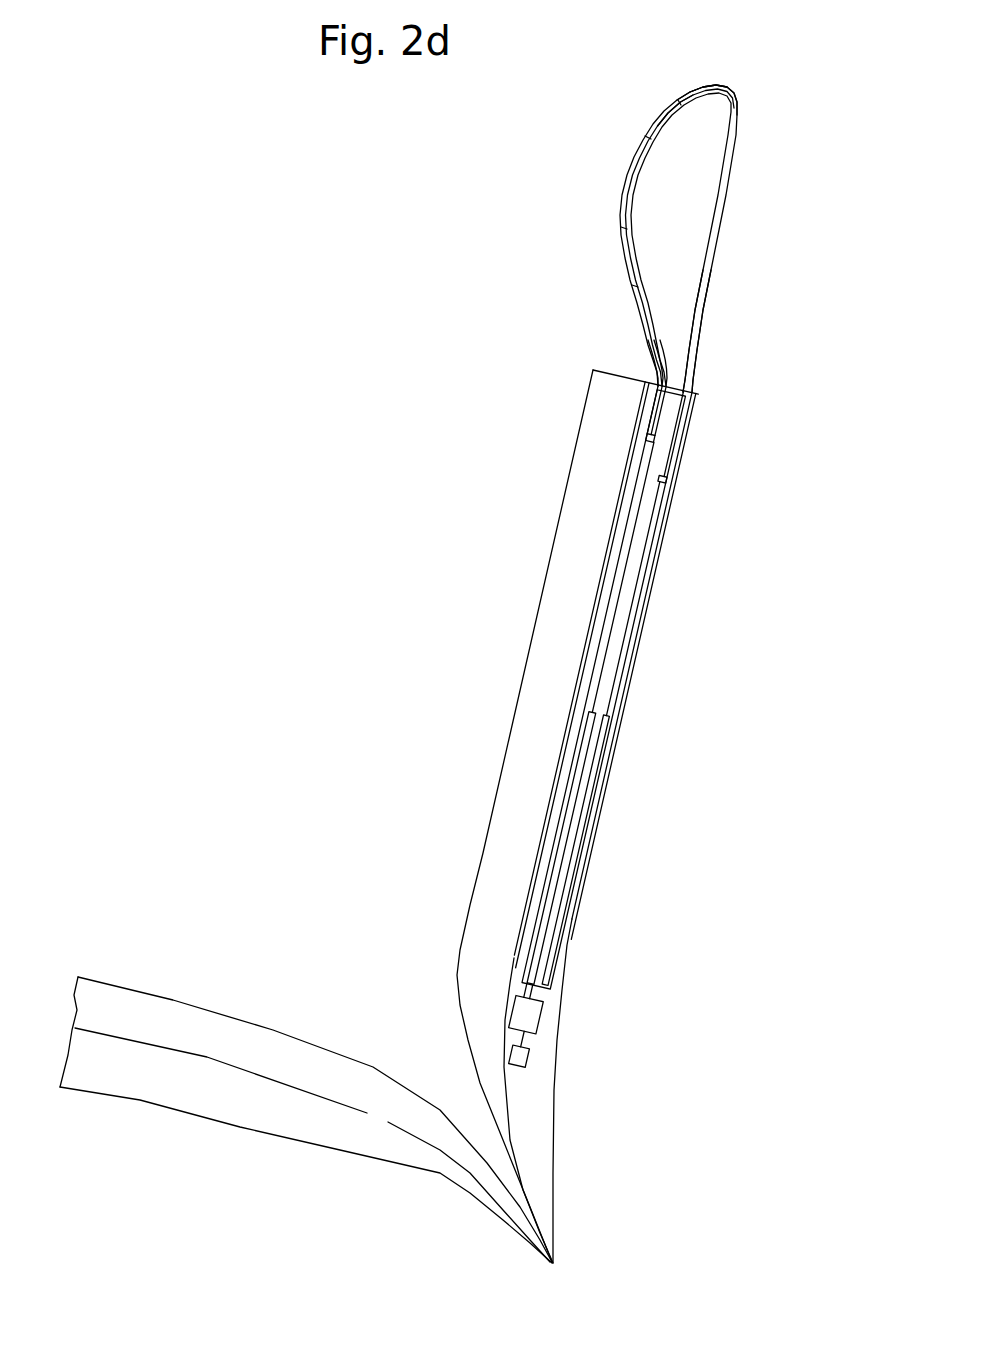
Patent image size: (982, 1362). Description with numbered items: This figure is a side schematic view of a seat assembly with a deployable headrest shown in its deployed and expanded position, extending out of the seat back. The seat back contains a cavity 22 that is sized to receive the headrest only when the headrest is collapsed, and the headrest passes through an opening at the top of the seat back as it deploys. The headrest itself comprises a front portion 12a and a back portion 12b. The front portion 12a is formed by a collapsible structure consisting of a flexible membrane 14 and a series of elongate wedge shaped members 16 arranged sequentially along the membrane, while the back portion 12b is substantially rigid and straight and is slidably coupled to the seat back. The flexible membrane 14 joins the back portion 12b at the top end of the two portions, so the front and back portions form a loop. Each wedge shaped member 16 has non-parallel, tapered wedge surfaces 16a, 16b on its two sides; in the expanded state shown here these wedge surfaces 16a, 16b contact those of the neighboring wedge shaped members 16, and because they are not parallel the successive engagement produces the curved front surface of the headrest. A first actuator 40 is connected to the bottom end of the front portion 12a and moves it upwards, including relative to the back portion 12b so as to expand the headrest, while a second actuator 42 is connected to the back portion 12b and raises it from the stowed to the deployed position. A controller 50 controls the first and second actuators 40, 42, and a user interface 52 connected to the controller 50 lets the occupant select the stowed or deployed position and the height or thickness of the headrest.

The front portion 12a is at (645, 327).
The back portion 12b is at (707, 293).
The flexible membrane 14 is at (622, 217).
The wedge shaped members 16 is at (677, 97).
The wedge surface 16a is at (687, 97).
The wedge surface 16b is at (672, 107).
The cavity 22 is at (632, 578).
The first actuator 40 is at (583, 750).
The second actuator 42 is at (595, 777).
The controller 50 is at (542, 1018).
The user interface 52 is at (535, 1058).